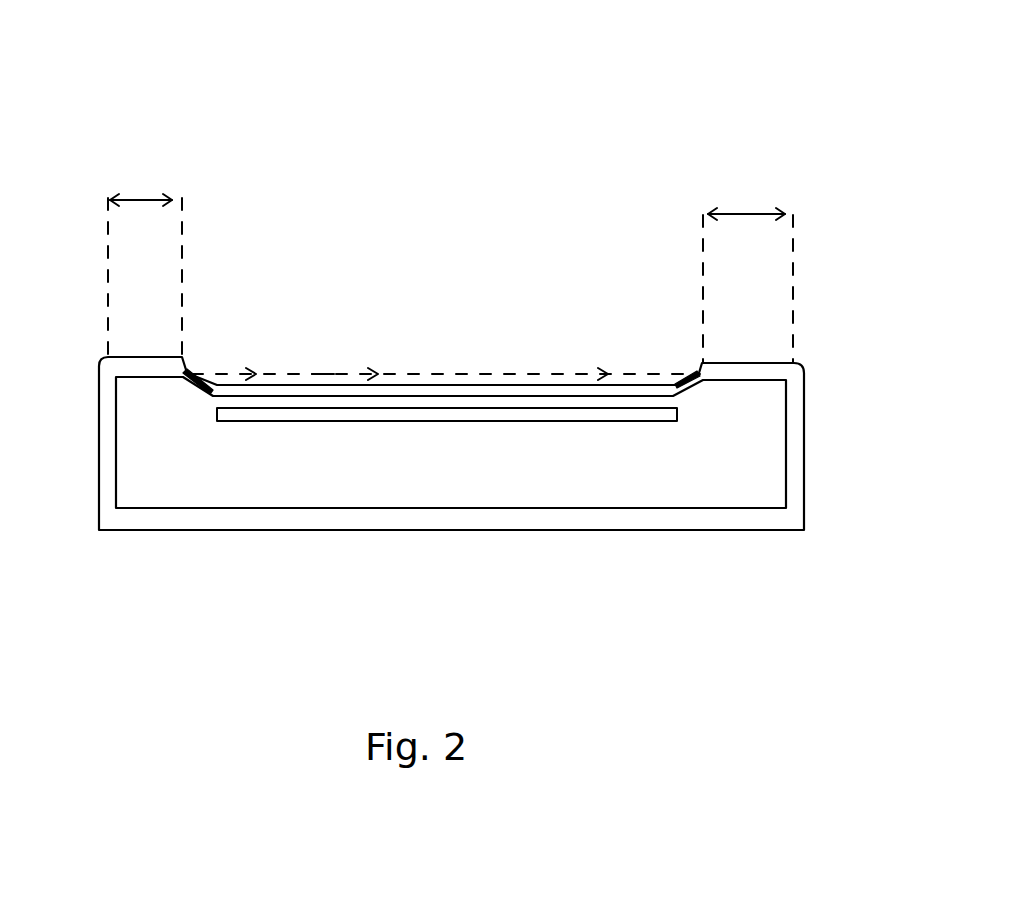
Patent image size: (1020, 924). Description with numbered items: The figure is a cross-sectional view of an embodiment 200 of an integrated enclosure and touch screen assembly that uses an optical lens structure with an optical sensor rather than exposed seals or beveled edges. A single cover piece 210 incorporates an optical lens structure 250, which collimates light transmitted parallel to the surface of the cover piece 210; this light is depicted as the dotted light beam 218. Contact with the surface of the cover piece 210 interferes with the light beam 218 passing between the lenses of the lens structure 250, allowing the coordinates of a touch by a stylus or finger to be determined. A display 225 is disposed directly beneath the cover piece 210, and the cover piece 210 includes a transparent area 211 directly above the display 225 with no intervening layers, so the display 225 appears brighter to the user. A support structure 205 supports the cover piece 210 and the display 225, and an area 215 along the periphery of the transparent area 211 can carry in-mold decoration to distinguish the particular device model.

The embodiment 200 is at (420, 59).
The support structure 205 is at (745, 442).
The cover piece 210 is at (88, 366).
The transparent area 211 is at (525, 375).
The area along the periphery of the transparent area 215 is at (138, 192).
The light beam 218 is at (323, 371).
The display 225 is at (518, 434).
The optical lens structure 250 is at (206, 361).